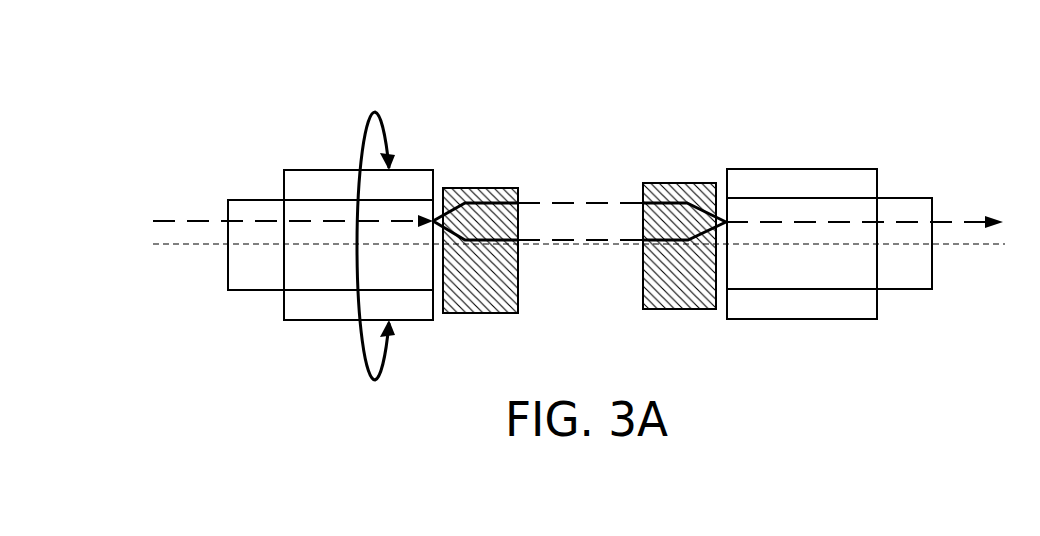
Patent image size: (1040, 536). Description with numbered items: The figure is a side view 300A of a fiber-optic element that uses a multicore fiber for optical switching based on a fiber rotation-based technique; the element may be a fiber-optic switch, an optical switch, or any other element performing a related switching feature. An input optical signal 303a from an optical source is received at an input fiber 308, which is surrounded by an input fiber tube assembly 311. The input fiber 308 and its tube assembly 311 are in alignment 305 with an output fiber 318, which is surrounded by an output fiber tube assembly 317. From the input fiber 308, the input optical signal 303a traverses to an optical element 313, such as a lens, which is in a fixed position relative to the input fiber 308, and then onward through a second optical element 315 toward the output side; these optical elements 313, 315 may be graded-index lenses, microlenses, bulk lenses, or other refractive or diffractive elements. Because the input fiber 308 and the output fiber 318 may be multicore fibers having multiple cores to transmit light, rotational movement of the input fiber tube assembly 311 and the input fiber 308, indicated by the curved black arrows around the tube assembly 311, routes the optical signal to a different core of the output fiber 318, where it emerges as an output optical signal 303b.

The side view 300A is at (612, 64).
The input optical signal 303a is at (207, 220).
The output optical signal 303b is at (961, 222).
The alignment 305 is at (181, 247).
The input fiber 308 is at (253, 200).
The input fiber tube assembly 311 is at (305, 170).
The optical element 313 is at (505, 188).
The optical element 315 is at (683, 183).
The output fiber tube assembly 317 is at (785, 169).
The output fiber 318 is at (885, 198).